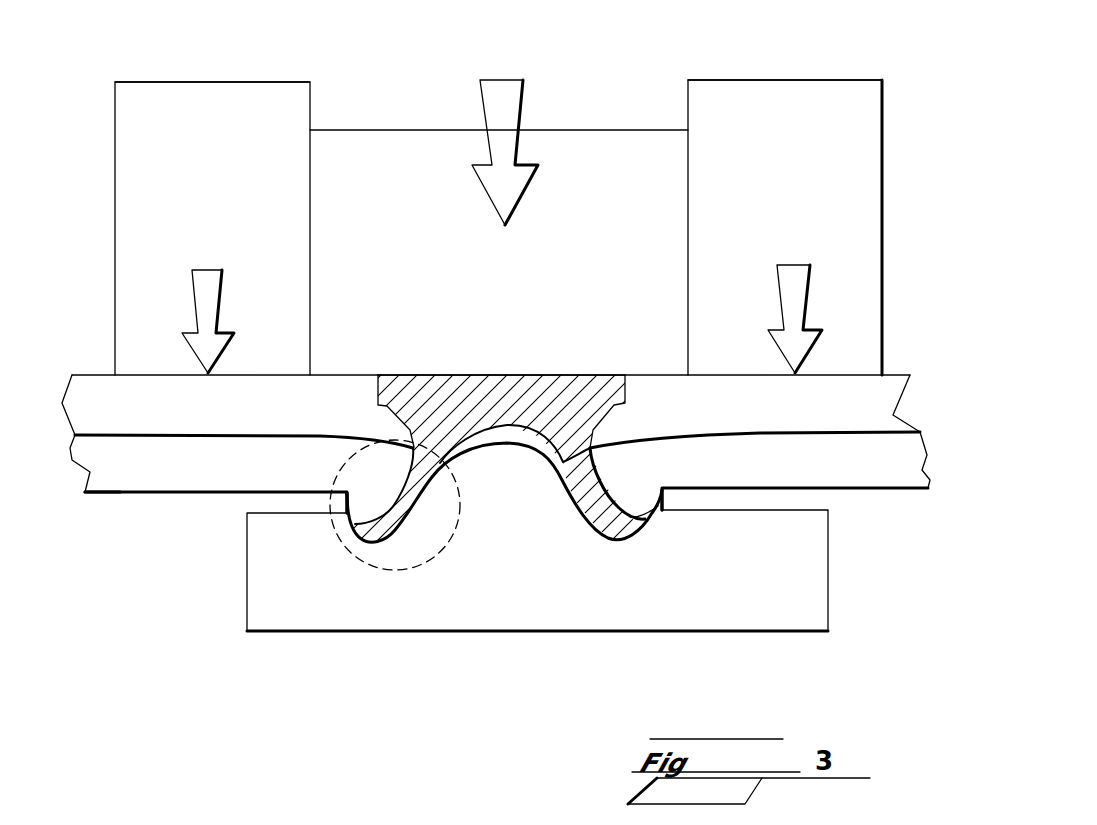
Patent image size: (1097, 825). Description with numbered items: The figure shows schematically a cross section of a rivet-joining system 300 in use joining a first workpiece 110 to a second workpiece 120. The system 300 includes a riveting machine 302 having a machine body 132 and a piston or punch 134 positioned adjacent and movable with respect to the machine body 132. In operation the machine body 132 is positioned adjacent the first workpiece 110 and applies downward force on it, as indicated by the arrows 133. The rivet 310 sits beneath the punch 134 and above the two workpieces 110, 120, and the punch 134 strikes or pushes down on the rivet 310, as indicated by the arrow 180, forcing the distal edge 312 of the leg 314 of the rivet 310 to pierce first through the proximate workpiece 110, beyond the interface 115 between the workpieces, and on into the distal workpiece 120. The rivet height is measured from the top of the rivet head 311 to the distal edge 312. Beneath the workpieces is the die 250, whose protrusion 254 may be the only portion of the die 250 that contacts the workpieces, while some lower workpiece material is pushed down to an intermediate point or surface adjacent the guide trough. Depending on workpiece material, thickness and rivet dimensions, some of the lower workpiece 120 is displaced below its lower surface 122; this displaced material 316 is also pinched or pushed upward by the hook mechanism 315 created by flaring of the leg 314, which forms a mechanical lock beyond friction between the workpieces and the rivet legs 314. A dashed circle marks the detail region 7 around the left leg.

The first workpiece 110 is at (170, 421).
The second workpiece 120 is at (175, 479).
The machine body 132 is at (190, 132).
The punch 134 is at (378, 180).
The arrow 133 is at (192, 298).
The arrow 180 is at (523, 88).
The rivet-joining system 300 is at (65, 62).
The riveting machine 302 is at (922, 125).
The rivet 310 is at (500, 338).
The rivet head 311 is at (560, 375).
The distal edge 312 is at (683, 495).
The leg 314 is at (433, 492).
The hook mechanism 315 is at (617, 470).
The displaced material 316 is at (631, 492).
The die 250 is at (315, 554).
The protrusion 254 is at (508, 518).
The interface 115 is at (323, 488).
The lower surface 122 is at (105, 508).
The detail circle 7 is at (342, 545).